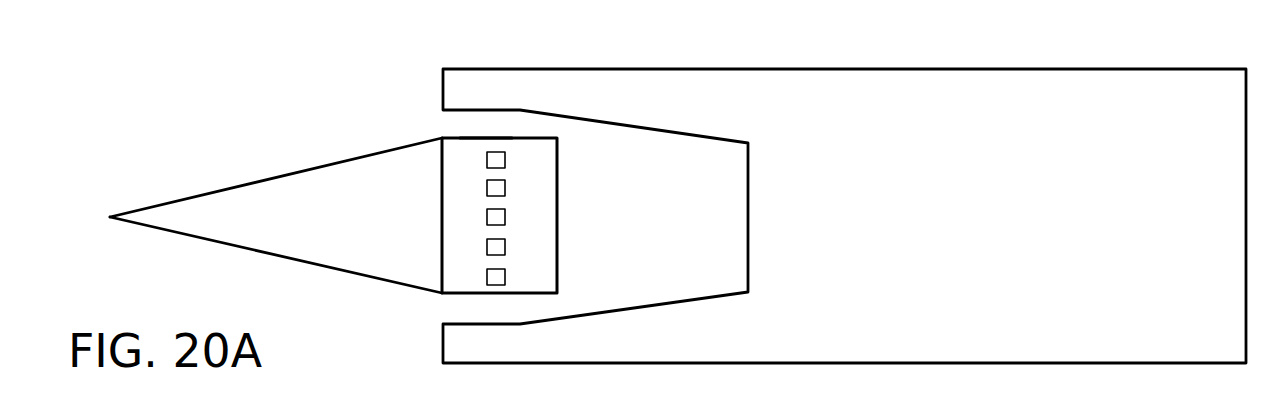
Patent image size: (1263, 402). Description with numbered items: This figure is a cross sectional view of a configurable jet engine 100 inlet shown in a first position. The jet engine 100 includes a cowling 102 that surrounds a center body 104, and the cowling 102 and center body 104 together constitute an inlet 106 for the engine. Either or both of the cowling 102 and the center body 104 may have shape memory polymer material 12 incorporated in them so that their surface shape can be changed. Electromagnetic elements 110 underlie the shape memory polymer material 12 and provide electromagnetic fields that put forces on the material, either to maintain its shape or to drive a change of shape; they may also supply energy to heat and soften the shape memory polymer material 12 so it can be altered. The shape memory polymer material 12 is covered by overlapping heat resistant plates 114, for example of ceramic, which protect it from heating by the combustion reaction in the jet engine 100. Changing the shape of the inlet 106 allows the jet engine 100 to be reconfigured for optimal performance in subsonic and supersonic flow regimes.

The jet engine 100 is at (265, 63).
The cowling 102 is at (429, 57).
The center body 104 is at (262, 278).
The inlet 106 is at (170, 175).
The shape memory polymer material 12 is at (540, 205).
The electromagnetic elements 110 is at (505, 246).
The heat resistant plates 114 is at (465, 138).